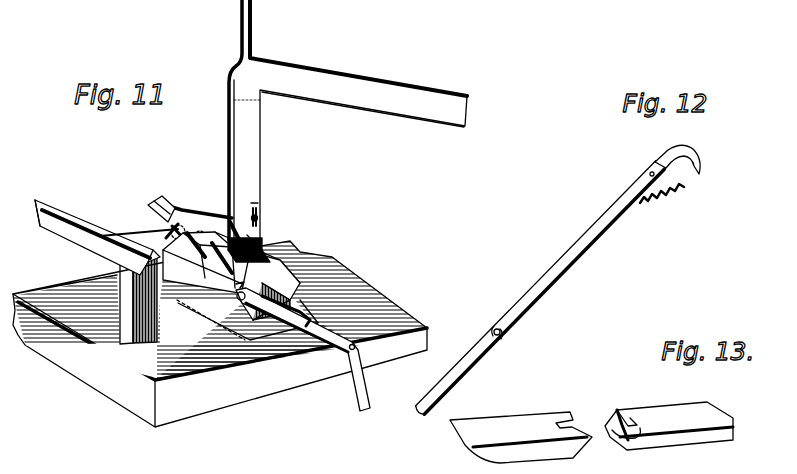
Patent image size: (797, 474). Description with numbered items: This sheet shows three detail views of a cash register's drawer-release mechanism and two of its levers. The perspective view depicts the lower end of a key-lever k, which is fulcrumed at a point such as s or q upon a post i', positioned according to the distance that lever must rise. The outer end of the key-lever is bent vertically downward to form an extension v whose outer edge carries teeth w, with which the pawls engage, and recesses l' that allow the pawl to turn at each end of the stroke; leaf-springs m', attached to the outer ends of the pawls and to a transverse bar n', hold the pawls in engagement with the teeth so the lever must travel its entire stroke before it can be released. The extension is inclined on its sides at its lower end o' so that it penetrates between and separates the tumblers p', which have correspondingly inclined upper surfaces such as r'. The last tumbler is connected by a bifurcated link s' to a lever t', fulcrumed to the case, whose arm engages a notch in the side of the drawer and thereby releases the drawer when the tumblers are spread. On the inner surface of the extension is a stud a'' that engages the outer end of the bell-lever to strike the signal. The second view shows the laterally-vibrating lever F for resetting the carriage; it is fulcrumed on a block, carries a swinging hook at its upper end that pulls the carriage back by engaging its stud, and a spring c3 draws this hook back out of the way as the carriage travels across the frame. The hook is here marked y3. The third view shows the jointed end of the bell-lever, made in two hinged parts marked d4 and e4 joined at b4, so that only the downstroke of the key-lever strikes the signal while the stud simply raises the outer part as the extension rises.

In FIG. 11, the post i' is at (329, 125).
In FIG. 11, the key-lever k is at (363, 104).
In FIG. 11, the vertical extension of key-lever v is at (248, 136).
In FIG. 11, the teeth w is at (229, 151).
In FIG. 11, the recesses l' is at (166, 205).
In FIG. 11, the stud or projection a'' is at (275, 203).
In FIG. 11, the inclined lower end of extension o' is at (270, 235).
In FIG. 11, the transverse bar n' is at (97, 232).
In FIG. 11, the leaf-springs m' is at (164, 215).
In FIG. 11, the tumblers p' is at (231, 281).
In FIG. 11, the inclined upper surface of tumbler r' is at (270, 286).
In FIG. 11, the fulcrum q is at (239, 279).
In FIG. 11, the bifurcated link s' is at (248, 323).
In FIG. 11, the lever t' is at (315, 349).
In FIG. 11, the fulcrum s is at (220, 334).
In FIG. 12, the laterally-vibrating lever F is at (553, 281).
In FIG. 12, the hook y3 is at (700, 172).
In FIG. 12, the spring c3 is at (665, 197).
In FIG. 13, the joint b4 is at (600, 397).
In FIG. 13, the left piece d4 is at (521, 437).
In FIG. 13, the right piece e4 is at (669, 426).